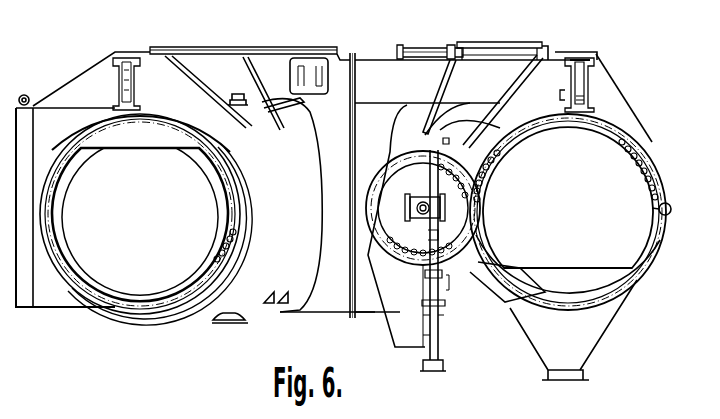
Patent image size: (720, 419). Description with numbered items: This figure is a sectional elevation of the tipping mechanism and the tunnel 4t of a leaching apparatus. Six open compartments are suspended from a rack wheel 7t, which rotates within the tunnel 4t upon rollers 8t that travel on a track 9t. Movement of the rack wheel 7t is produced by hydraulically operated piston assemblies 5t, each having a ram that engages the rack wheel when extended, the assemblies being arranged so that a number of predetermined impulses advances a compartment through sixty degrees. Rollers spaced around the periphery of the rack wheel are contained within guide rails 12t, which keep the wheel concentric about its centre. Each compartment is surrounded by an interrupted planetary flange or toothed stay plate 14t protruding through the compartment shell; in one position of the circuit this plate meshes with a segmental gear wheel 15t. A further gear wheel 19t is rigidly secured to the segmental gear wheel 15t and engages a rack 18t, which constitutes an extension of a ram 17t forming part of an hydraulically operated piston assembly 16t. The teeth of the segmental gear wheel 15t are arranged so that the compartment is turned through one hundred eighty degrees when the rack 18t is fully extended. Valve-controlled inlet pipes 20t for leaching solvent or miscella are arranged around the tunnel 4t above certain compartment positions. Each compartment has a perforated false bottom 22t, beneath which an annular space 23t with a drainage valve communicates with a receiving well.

The tunnel 4t is at (637, 238).
The hydraulically operated piston assemblies 5t is at (428, 47).
The rack wheel 7t is at (580, 60).
The rollers 8t is at (590, 73).
The track 9t is at (590, 98).
The guide rails 12t is at (618, 88).
The toothed stay plate 14t is at (664, 202).
The segmental gear wheel 15t is at (470, 145).
The hydraulically operated piston assembly 16t is at (441, 343).
The ram 17t is at (425, 234).
The rack 18t is at (437, 190).
The gear wheel 19t is at (420, 197).
The valve-controlled inlet pipes 20t is at (176, 118).
The perforated false bottoms 22t is at (172, 286).
The annular space 23t is at (117, 292).